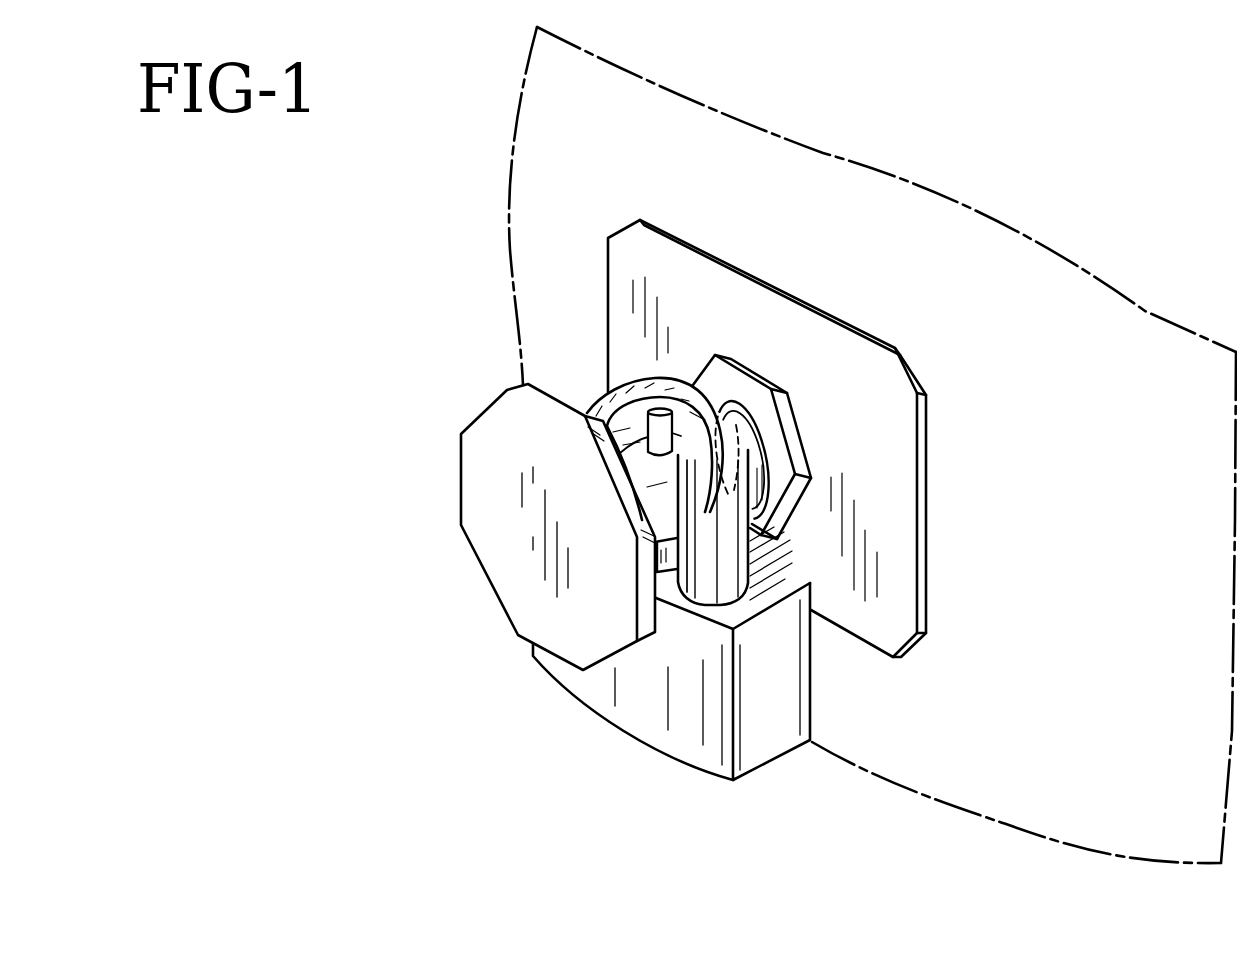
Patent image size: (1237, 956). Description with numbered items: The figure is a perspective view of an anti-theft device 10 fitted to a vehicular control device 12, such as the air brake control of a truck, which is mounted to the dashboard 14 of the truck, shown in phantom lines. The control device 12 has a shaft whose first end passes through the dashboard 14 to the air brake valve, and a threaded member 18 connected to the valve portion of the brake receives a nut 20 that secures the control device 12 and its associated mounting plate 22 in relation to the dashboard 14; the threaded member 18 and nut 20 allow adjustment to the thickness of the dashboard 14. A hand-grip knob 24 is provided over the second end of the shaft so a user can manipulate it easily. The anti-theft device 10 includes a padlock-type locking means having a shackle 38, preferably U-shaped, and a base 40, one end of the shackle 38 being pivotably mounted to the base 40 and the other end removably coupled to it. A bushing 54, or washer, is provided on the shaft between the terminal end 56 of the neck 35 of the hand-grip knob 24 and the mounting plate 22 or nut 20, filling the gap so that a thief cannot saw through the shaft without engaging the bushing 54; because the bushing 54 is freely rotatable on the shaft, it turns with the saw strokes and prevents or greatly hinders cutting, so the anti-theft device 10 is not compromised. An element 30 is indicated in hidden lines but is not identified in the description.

The anti-theft device 10 is at (332, 719).
The vehicular control device 12 is at (244, 392).
The dashboard 14 is at (1018, 223).
The threaded member 18 is at (747, 402).
The nut 20 is at (722, 378).
The mounting plate 22 is at (632, 260).
The hand-grip knob 24 is at (512, 552).
The threaded shaft 30 is at (600, 420).
The neck 35 is at (645, 518).
The shackle 38 is at (728, 568).
The base 40 is at (605, 697).
The bushing 54 is at (737, 458).
The terminal end 56 is at (640, 387).